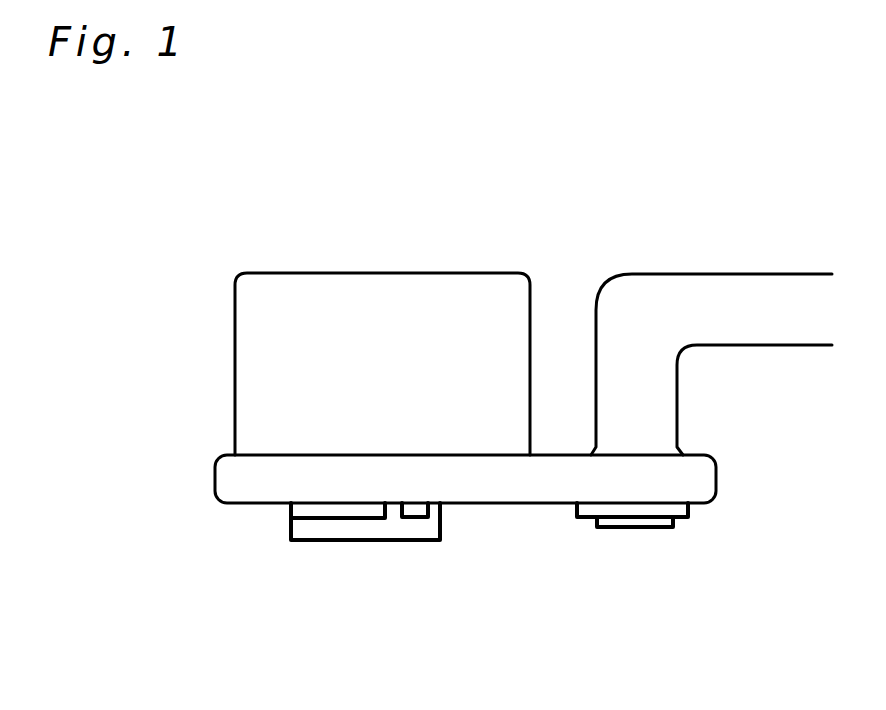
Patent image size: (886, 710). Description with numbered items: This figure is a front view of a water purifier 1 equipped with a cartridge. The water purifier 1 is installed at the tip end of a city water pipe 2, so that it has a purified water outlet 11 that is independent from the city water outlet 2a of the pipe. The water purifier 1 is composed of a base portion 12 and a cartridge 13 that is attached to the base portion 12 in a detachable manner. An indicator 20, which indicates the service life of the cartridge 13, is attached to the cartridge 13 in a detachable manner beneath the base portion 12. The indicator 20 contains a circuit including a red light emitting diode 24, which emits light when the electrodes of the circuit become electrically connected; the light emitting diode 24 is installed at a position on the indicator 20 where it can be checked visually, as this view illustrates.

The water purifier 1 is at (212, 397).
The cartridge 13 is at (335, 300).
The base portion 12 is at (228, 478).
The city water pipe 2 is at (676, 298).
The city water outlet 2a is at (640, 528).
The indicator 20 is at (375, 543).
The purified water outlet 11 is at (319, 512).
The red light emitting diode 24 is at (417, 513).